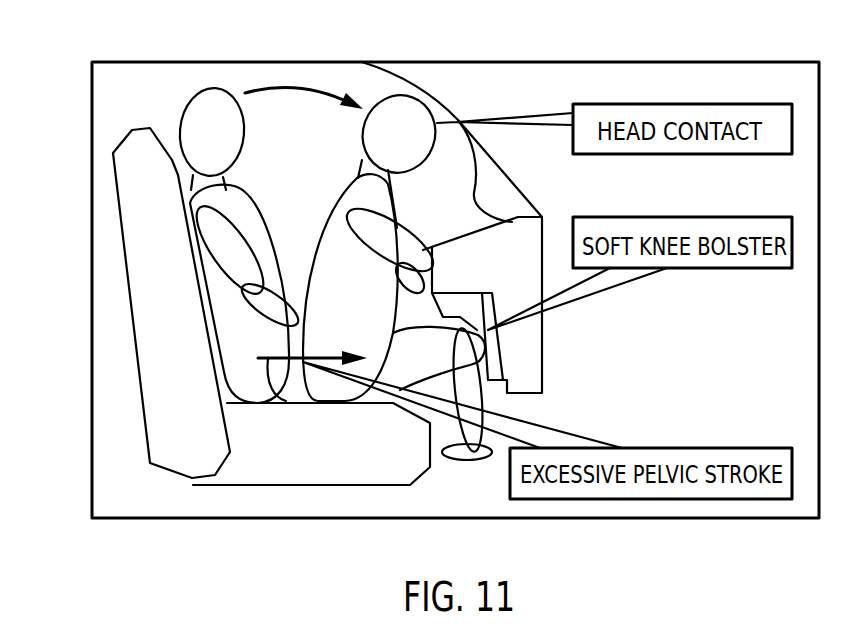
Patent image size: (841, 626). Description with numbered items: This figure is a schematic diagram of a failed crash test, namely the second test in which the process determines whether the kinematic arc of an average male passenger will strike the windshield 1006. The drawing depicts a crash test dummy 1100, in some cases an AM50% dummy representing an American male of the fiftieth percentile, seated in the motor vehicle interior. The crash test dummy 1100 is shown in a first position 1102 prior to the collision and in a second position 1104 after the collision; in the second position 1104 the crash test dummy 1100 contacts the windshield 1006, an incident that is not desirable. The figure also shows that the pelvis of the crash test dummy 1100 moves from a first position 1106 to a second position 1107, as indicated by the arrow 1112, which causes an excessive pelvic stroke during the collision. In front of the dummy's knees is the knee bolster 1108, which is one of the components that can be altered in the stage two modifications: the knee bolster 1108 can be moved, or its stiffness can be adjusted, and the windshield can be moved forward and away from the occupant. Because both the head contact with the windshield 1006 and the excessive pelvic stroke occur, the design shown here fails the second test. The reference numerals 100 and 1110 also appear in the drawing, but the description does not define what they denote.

The vehicle occupant restraint system 100 is at (640, 183).
The windshield 1006 is at (417, 83).
The crash test dummy 1100 is at (203, 254).
The first position 1102 is at (208, 100).
The second position 1104 is at (397, 107).
The first position of pelvis 1106 is at (258, 393).
The second position of pelvis 1107 is at (337, 397).
The knee bolster 1108 is at (488, 345).
The airbag lower portion 1110 is at (457, 178).
The arrow 1112 is at (287, 396).